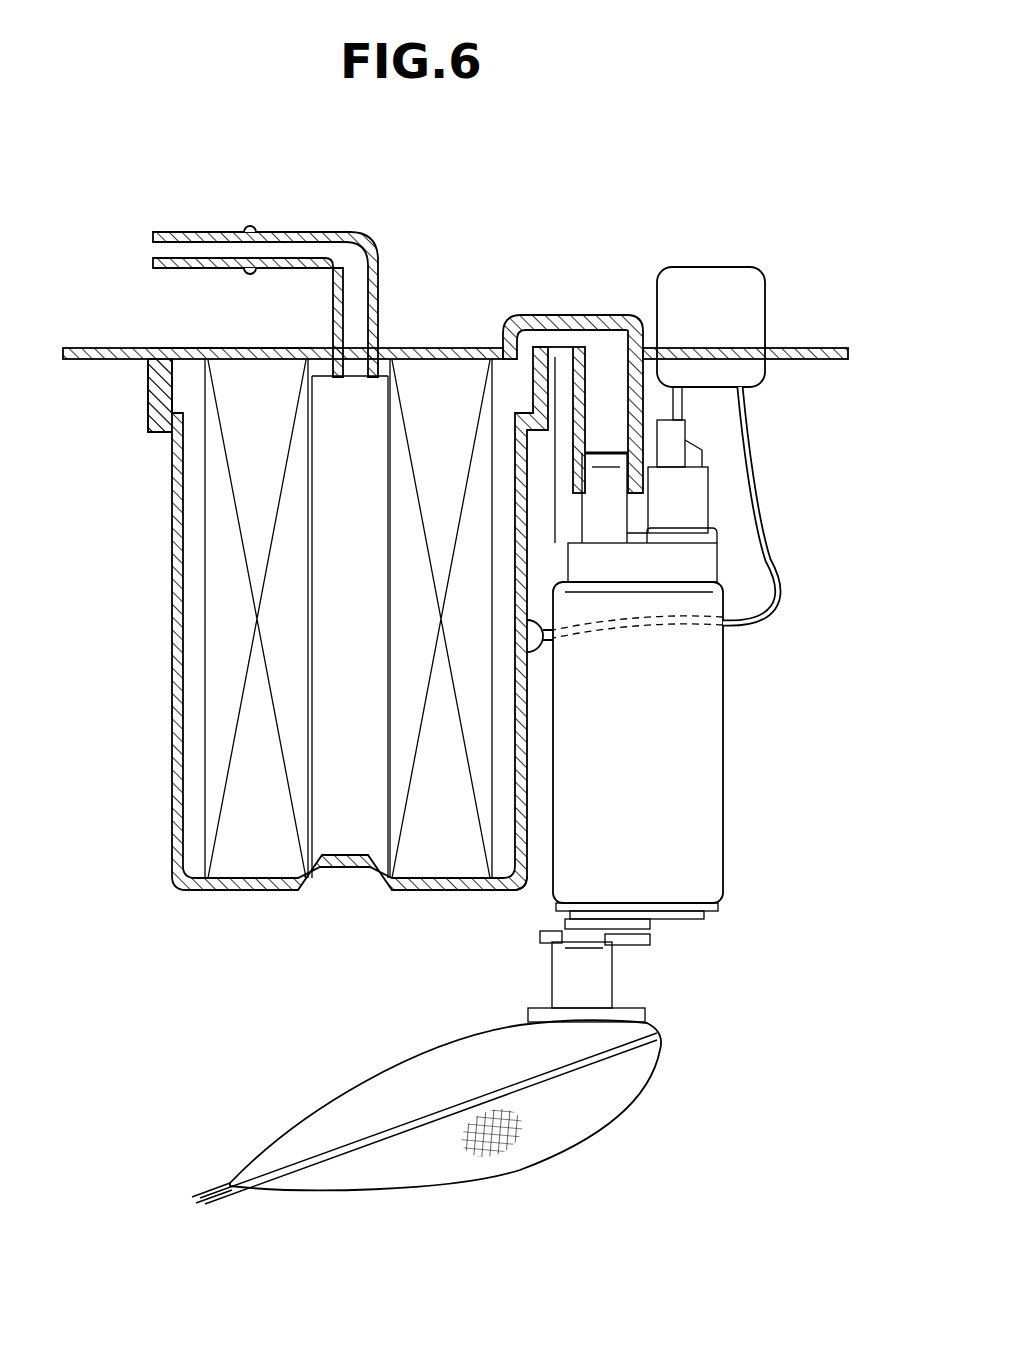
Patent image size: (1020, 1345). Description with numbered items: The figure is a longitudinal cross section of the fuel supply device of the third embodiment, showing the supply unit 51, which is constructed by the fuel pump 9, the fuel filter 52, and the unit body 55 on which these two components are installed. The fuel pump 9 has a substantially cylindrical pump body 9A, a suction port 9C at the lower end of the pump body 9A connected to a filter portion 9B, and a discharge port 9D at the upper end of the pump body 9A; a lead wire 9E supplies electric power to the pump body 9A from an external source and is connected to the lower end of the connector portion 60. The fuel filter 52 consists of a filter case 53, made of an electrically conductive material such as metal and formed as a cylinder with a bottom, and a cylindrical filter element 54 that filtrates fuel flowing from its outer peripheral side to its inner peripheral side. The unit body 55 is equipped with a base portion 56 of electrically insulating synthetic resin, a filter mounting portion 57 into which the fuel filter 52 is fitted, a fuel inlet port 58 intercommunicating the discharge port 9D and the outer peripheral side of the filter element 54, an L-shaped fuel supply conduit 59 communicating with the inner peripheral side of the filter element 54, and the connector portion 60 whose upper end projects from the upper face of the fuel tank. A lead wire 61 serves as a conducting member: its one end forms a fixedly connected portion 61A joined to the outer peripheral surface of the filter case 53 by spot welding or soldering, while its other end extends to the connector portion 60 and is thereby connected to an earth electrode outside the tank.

The supply unit 51 is at (660, 213).
The fuel filter 52 is at (243, 897).
The filter case 53 is at (440, 892).
The filter element 54 is at (212, 668).
The unit body 55 is at (450, 335).
The base portion 56 is at (228, 348).
The filter mounting portion 57 is at (153, 380).
The fuel inlet port 58 is at (627, 383).
The fuel supply conduit 59 is at (203, 232).
The connector portion 60 is at (741, 292).
The lead wire 61 is at (772, 595).
The fixedly connected portion 61A is at (533, 652).
The fuel pump 9 is at (527, 793).
The pump body 9A is at (708, 852).
The filter portion 9B is at (558, 1118).
The suction port 9C is at (602, 978).
The discharge port 9D is at (610, 515).
The lead wire 9E is at (684, 410).